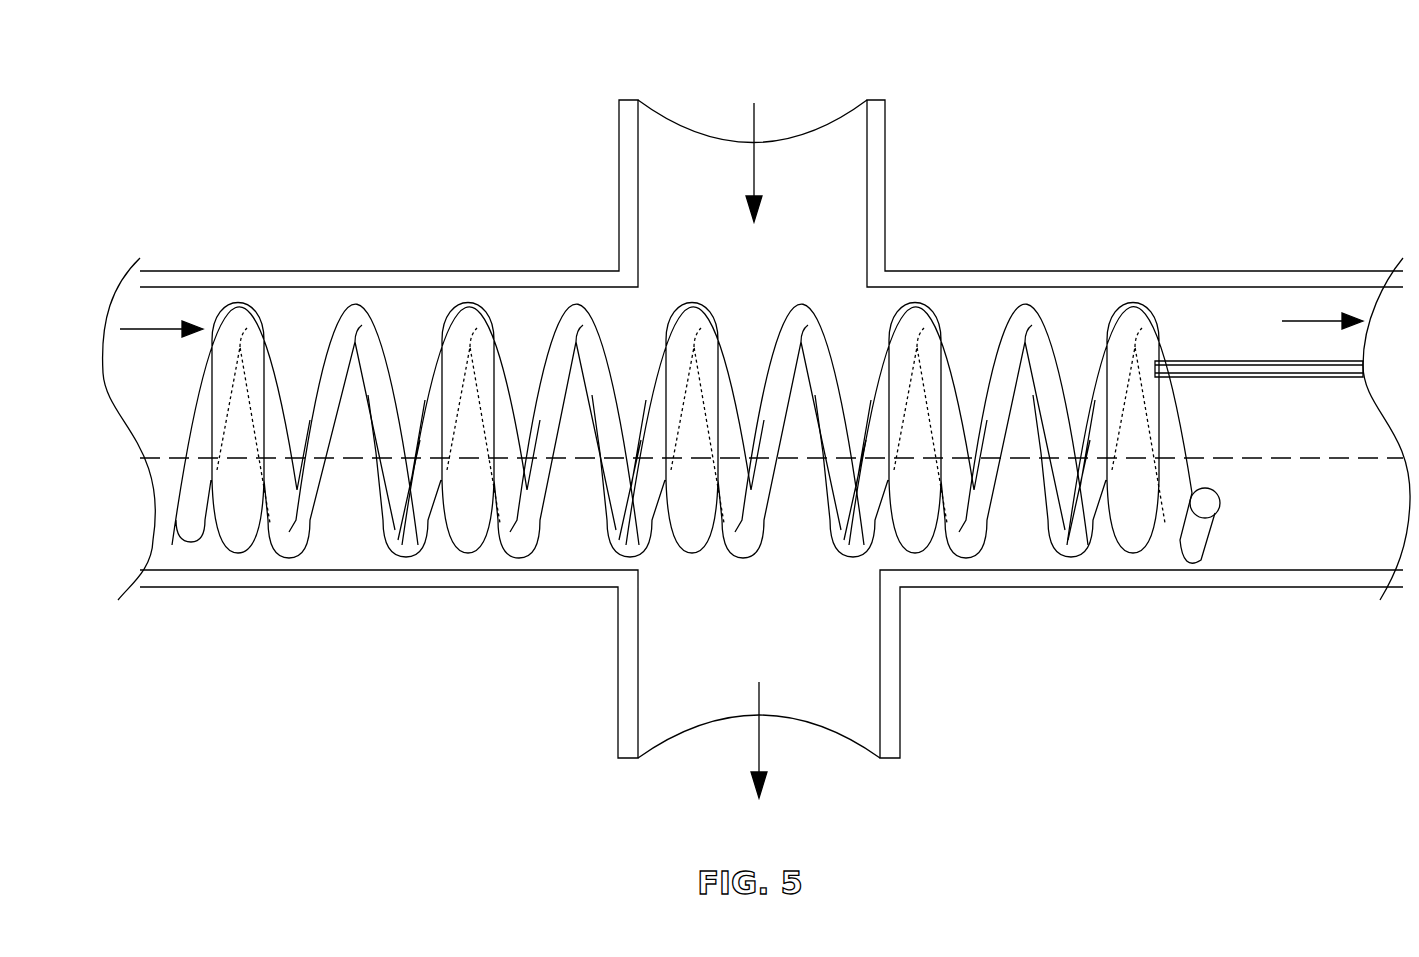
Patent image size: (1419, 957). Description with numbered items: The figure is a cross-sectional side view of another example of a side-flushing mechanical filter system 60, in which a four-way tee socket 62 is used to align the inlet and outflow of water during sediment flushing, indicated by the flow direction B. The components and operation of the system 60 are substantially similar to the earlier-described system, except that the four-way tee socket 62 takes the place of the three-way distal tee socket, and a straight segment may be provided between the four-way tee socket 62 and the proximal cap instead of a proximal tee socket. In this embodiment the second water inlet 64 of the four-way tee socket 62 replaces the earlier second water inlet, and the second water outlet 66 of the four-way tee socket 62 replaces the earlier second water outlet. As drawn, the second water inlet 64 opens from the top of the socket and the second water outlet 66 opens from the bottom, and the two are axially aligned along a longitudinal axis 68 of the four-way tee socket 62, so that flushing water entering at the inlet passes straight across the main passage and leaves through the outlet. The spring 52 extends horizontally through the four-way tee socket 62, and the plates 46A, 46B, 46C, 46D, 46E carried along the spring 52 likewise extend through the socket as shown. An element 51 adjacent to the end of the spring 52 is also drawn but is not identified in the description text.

The plate 46A is at (1133, 332).
The plate 46B is at (915, 328).
The plate 46C is at (692, 325).
The plate 46D is at (468, 328).
The plate 46E is at (238, 328).
The rod 51 is at (1303, 377).
The spring 52 is at (400, 553).
The side-flushing mechanical filter system 60 is at (1092, 130).
The four-way tee socket 62 is at (1092, 275).
The second water inlet 64 is at (825, 130).
The second water outlet 66 is at (690, 727).
The longitudinal axis 68 is at (1300, 460).